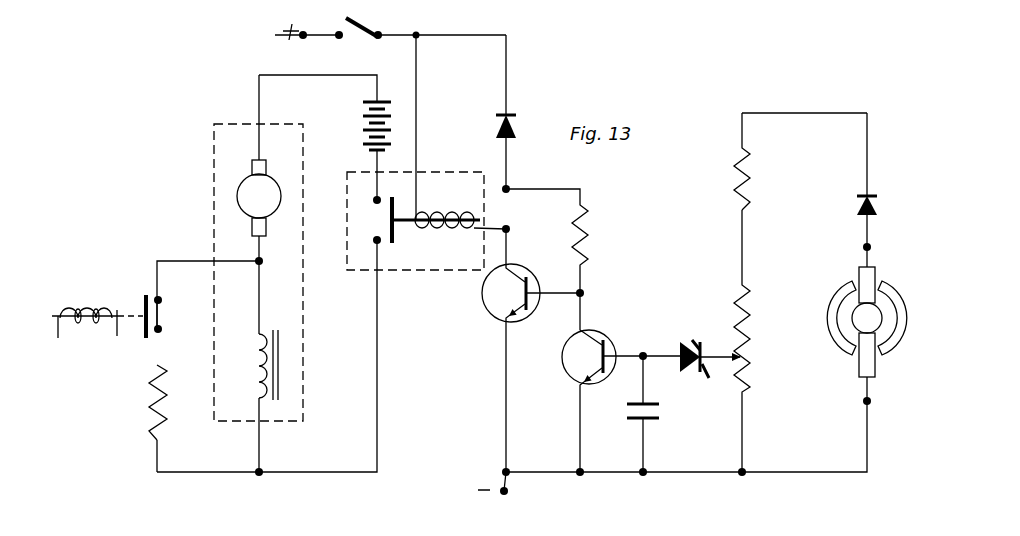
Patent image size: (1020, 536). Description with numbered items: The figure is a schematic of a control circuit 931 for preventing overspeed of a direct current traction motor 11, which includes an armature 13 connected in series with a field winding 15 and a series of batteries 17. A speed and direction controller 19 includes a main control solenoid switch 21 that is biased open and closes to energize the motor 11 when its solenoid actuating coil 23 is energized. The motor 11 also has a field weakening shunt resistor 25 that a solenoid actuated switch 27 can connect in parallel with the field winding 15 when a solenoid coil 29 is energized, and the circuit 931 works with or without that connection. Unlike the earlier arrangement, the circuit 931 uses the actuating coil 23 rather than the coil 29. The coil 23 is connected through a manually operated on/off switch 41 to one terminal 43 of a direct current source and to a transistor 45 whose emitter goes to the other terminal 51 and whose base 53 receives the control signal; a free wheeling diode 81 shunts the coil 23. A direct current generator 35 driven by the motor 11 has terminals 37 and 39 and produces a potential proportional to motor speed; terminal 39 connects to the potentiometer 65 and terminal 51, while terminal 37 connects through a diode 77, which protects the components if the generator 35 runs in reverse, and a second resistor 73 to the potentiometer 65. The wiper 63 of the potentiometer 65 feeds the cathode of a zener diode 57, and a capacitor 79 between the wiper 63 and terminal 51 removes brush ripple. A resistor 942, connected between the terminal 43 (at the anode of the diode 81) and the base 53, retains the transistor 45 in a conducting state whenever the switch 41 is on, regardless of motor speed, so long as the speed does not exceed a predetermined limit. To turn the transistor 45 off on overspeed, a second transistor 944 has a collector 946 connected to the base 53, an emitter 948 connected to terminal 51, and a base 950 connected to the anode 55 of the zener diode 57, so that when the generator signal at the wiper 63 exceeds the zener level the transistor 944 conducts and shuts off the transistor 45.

The direct current traction motor 11 is at (206, 141).
The armature 13 is at (258, 196).
The field winding 15 is at (272, 355).
The batteries 17 is at (365, 110).
The speed and direction controller 19 is at (452, 170).
The main control solenoid switch 21 is at (383, 228).
The solenoid actuating coil 23 is at (452, 227).
The field weakening shunt resistor 25 is at (152, 390).
The solenoid actuated switch 27 is at (146, 287).
The solenoid coil 29 is at (91, 304).
The direct current generator 35 is at (890, 294).
The terminal 37 is at (863, 247).
The terminal 39 is at (864, 403).
The manually operated on/off switch 41 is at (368, 28).
The terminal 43 is at (300, 38).
The transistor 45 is at (482, 310).
The terminal 51 is at (510, 491).
The base 53 is at (535, 276).
The anode 55 is at (690, 366).
The zener diode 57 is at (704, 329).
The wiper 63 is at (746, 362).
The potentiometer 65 is at (758, 320).
The second resistor 73 is at (752, 168).
The diode 77 is at (857, 208).
The capacitor 79 is at (633, 412).
The free wheeling diode 81 is at (498, 125).
The control circuit 931 is at (460, 386).
The resistor 942 is at (588, 220).
The second transistor 944 is at (608, 315).
The collector 946 is at (594, 338).
The emitter 948 is at (584, 366).
The base 950 is at (606, 350).